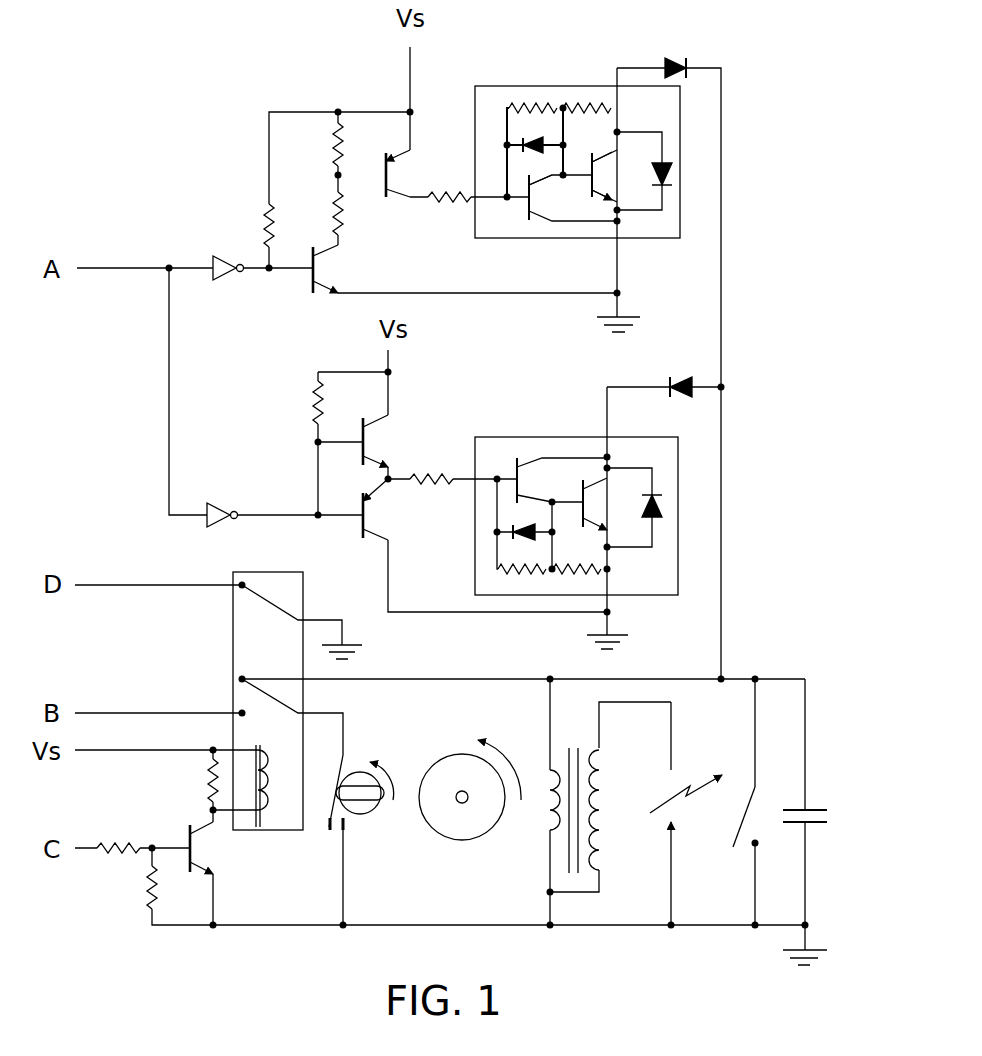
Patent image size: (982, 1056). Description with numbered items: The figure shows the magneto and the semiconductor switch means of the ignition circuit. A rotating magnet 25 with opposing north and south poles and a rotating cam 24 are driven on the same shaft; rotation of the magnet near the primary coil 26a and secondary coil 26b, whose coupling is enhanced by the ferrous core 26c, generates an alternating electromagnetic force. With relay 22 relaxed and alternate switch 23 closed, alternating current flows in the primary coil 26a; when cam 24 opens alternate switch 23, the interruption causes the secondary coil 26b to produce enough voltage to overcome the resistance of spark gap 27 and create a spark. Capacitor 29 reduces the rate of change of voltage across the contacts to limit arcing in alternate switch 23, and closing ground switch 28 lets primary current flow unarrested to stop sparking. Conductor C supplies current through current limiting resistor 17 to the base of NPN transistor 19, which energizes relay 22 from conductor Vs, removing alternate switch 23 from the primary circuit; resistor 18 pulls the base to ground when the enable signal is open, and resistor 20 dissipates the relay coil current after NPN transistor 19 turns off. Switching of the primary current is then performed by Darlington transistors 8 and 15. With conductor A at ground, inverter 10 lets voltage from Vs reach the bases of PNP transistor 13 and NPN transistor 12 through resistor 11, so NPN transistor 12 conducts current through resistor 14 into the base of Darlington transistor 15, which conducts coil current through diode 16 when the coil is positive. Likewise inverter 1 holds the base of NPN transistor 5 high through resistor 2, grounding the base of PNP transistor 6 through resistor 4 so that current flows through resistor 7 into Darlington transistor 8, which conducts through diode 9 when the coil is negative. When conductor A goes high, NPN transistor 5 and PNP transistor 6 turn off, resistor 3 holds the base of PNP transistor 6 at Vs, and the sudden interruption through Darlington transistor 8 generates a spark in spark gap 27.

The inverter 1 is at (224, 282).
The resistor 2 is at (263, 227).
The resistor 3 is at (333, 162).
The resistor 4 is at (333, 230).
The NPN transistor 5 is at (318, 292).
The PNP transistor 6 is at (388, 200).
The resistor 7 is at (440, 194).
The Darlington transistor 8 is at (520, 86).
The diode 9 is at (672, 62).
The inverter 10 is at (220, 525).
The resistor 11 is at (312, 420).
The NPN transistor 12 is at (364, 420).
The PNP transistor 13 is at (360, 532).
The resistor 14 is at (447, 476).
The Darlington transistor 15 is at (530, 437).
The diode 16 is at (687, 383).
The current limiting resistor 17 is at (108, 852).
The resistor 18 is at (150, 905).
The NPN transistor 19 is at (188, 826).
The resistor 20 is at (205, 797).
The relay 22 is at (233, 672).
The alternate switch 23 is at (328, 822).
The rotating cam 24 is at (360, 815).
The rotating magnet 25 is at (440, 755).
The primary coil 26a is at (545, 815).
The secondary coil 26b is at (600, 848).
The ferrous core 26c is at (571, 750).
The spark gap 27 is at (670, 765).
The ground switch 28 is at (733, 840).
The capacitor 29 is at (815, 808).